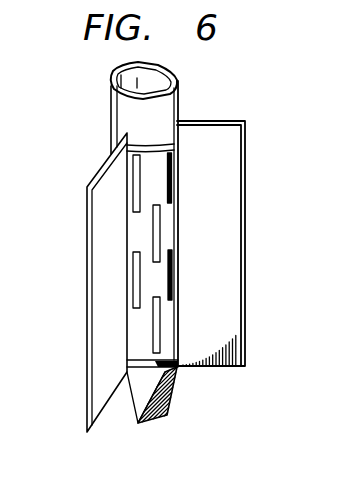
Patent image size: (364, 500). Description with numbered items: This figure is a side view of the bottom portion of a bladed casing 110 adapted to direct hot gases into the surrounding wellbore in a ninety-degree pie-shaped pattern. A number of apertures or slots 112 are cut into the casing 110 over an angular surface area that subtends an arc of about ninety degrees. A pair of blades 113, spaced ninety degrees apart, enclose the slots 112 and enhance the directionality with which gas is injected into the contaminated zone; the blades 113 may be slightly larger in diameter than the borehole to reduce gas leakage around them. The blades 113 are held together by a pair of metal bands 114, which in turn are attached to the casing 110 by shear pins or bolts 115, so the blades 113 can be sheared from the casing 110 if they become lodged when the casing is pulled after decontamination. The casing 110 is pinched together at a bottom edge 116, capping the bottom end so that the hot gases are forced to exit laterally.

The casing 110 is at (111, 125).
The slots 112 is at (162, 300).
The blades 113 is at (246, 192).
The metal bands 114 is at (133, 372).
The shear pins or bolts 115 is at (157, 145).
The bottom edge 116 is at (158, 424).